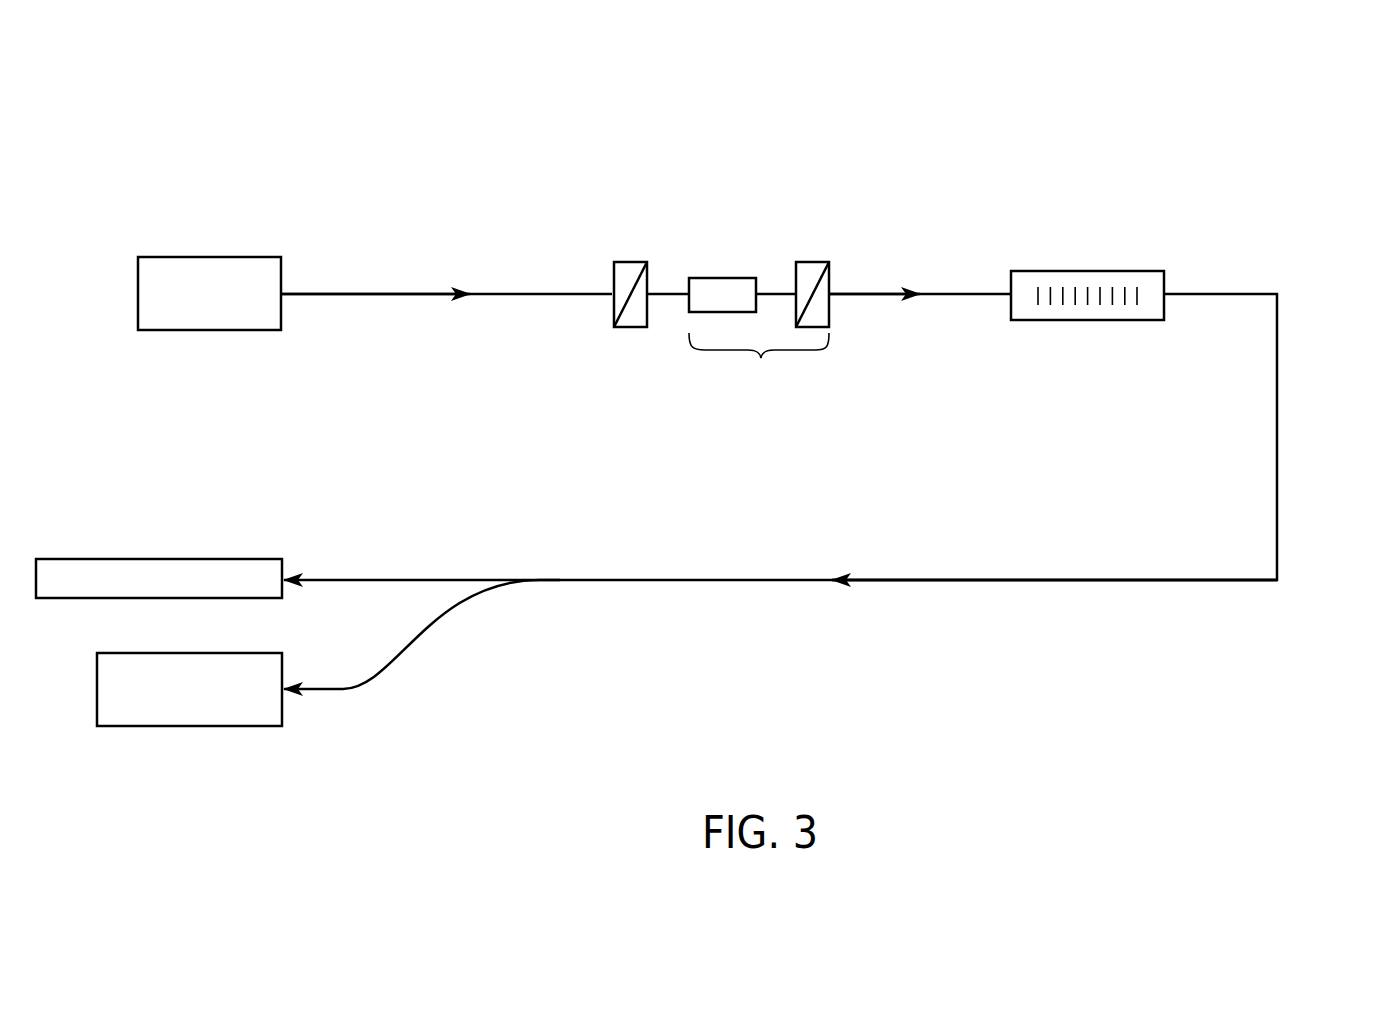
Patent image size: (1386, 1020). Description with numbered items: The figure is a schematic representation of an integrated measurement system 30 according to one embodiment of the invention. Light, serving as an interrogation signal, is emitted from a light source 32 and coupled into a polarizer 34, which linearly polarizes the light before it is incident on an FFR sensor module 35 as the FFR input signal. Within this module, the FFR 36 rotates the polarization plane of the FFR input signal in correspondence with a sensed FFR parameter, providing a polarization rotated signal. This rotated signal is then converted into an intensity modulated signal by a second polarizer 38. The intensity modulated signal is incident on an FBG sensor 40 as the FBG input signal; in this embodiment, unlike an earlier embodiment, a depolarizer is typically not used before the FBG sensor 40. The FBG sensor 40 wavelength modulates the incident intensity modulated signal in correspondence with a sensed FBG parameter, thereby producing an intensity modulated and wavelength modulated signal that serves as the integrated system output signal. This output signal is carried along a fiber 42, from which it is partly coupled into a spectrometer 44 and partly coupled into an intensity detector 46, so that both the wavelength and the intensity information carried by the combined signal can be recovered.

The measurement system 30 is at (1268, 106).
The light source 32 is at (198, 256).
The polarizer 34 is at (631, 261).
The FFR sensor module 35 is at (759, 363).
The FFR 36 is at (721, 277).
The polarizer 38 is at (815, 261).
The FBG sensor 40 is at (1089, 270).
The fiber 42 is at (779, 579).
The spectrometer 44 is at (158, 558).
The intensity detector 46 is at (160, 728).